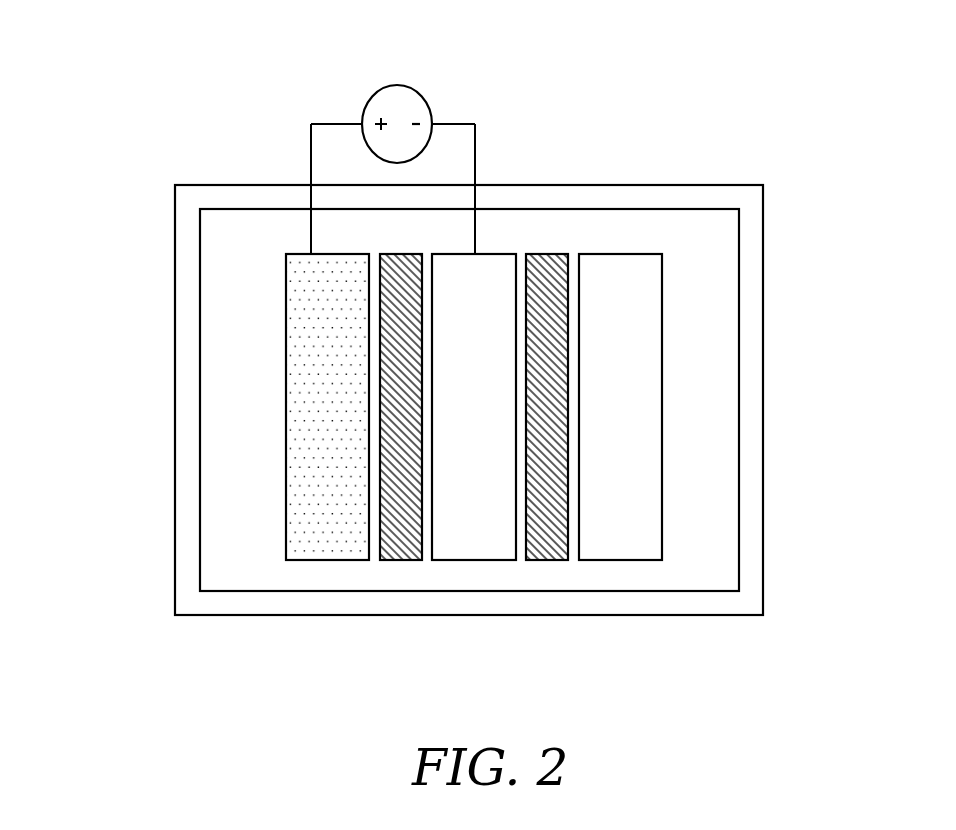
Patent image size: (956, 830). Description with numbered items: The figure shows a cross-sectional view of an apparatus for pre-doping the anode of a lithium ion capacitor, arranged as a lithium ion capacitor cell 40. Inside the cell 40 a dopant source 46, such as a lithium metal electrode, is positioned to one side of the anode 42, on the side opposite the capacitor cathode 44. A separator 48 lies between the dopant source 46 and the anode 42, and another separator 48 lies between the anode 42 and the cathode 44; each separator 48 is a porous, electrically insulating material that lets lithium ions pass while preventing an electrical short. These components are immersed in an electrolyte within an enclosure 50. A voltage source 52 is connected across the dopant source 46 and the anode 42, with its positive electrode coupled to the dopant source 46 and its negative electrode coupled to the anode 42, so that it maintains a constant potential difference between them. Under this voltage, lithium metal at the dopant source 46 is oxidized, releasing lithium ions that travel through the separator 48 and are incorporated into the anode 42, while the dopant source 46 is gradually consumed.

The lithium ion capacitor cell 40 is at (131, 97).
The anode 42 is at (473, 546).
The capacitor cathode 44 is at (640, 377).
The dopant source 46 is at (305, 443).
The separator 48 is at (402, 546).
The housing 50 is at (187, 591).
The voltage source 52 is at (333, 92).